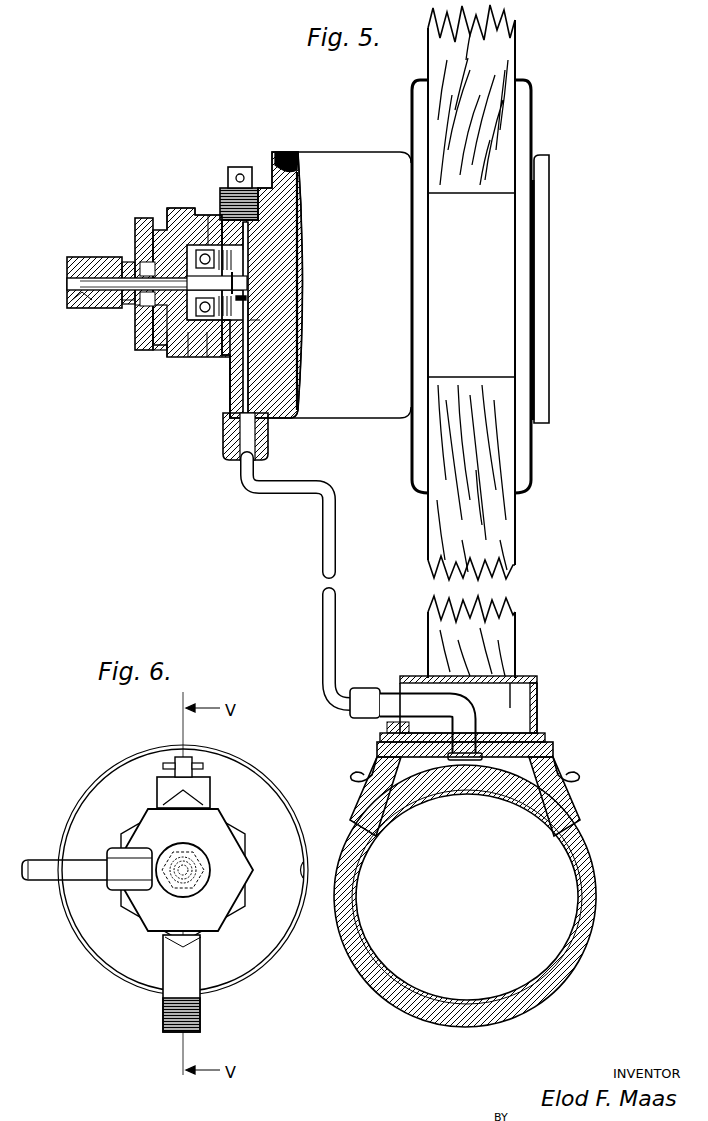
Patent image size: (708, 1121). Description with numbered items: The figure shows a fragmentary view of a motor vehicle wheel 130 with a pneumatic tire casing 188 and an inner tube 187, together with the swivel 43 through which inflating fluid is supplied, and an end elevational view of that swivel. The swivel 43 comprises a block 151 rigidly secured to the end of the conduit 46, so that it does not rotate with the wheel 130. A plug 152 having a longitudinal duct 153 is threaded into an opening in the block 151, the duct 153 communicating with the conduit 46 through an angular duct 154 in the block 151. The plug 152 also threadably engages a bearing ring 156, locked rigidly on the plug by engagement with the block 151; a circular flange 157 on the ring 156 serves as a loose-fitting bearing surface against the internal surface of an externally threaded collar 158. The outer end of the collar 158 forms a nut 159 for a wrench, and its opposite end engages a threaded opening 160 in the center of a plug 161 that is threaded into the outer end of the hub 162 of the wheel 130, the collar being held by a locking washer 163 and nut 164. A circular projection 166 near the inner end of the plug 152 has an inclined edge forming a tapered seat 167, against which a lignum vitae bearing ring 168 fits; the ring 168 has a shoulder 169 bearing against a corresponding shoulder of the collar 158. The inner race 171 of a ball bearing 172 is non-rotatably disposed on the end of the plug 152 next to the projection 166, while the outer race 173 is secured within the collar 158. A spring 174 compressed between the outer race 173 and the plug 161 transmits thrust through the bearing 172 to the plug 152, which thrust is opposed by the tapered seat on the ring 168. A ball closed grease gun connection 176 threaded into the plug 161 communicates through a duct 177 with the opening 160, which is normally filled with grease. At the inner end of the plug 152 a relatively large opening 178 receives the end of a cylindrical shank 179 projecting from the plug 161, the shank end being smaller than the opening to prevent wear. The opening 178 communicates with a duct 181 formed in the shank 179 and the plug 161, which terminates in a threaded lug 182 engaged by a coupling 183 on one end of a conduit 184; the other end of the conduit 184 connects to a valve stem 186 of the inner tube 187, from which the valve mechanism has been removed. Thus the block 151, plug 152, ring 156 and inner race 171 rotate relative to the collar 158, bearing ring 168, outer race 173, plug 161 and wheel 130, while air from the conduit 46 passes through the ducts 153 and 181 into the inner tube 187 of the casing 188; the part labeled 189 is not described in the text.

In FIG. 5, the swivel 43 is at (168, 210).
In FIG. 5, the conduit 46 is at (70, 282).
In FIG. 6, the conduit 46 is at (35, 880).
In FIG. 5, the wheel 130 is at (566, 381).
In FIG. 5, the block 151 is at (82, 257).
In FIG. 6, the block 151 is at (193, 848).
In FIG. 5, the plug 152 is at (120, 306).
In FIG. 5, the duct 153 is at (117, 265).
In FIG. 5, the duct 154 is at (78, 300).
In FIG. 5, the bearing ring 156 is at (138, 332).
In FIG. 5, the circular flange 157 is at (136, 268).
In FIG. 5, the externally threaded collar 158 is at (160, 230).
In FIG. 5, the nut 159 is at (140, 222).
In FIG. 6, the nut 159 is at (222, 812).
In FIG. 5, the threaded opening 160 is at (213, 345).
In FIG. 5, the plug 161 is at (270, 172).
In FIG. 6, the plug 161 is at (92, 795).
In FIG. 5, the hub 162 is at (286, 158).
In FIG. 5, the locking washer 163 is at (200, 215).
In FIG. 5, the nut 164 is at (183, 208).
In FIG. 5, the circular projection 166 is at (193, 350).
In FIG. 5, the tapered seat 167 is at (168, 340).
In FIG. 5, the bearing ring 168 is at (148, 345).
In FIG. 5, the shoulder 169 is at (183, 345).
In FIG. 5, the inner race 171 is at (222, 280).
In FIG. 5, the ball bearing 172 is at (226, 256).
In FIG. 5, the outer race 173 is at (220, 350).
In FIG. 5, the spring 174 is at (222, 268).
In FIG. 5, the grease gun connection 176 is at (236, 168).
In FIG. 6, the grease gun connection 176 is at (196, 762).
In FIG. 5, the duct 177 is at (249, 238).
In FIG. 5, the opening 178 is at (236, 290).
In FIG. 5, the cylindrical shank 179 is at (240, 320).
In FIG. 5, the duct 181 is at (249, 306).
In FIG. 5, the threaded lug 182 is at (228, 410).
In FIG. 5, the coupling 183 is at (270, 450).
In FIG. 5, the conduit 184 is at (340, 540).
In FIG. 5, the valve stem 186 is at (412, 698).
In FIG. 5, the inner tube 187 is at (527, 790).
In FIG. 5, the pneumatic tire casing 188 is at (588, 822).
In FIG. 5, the coupling 189 is at (366, 690).